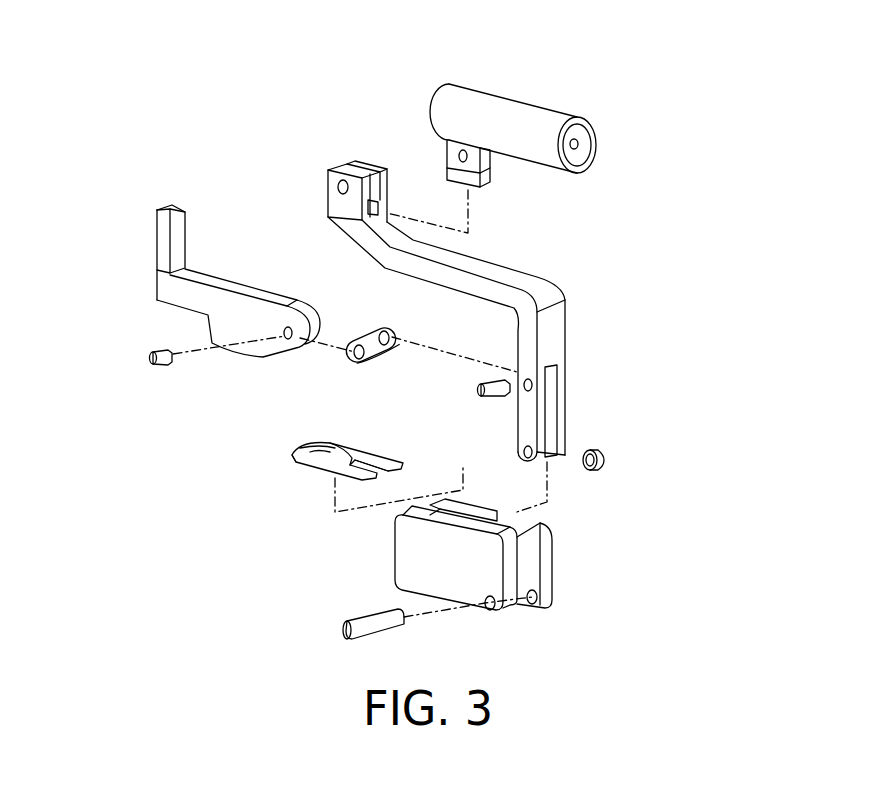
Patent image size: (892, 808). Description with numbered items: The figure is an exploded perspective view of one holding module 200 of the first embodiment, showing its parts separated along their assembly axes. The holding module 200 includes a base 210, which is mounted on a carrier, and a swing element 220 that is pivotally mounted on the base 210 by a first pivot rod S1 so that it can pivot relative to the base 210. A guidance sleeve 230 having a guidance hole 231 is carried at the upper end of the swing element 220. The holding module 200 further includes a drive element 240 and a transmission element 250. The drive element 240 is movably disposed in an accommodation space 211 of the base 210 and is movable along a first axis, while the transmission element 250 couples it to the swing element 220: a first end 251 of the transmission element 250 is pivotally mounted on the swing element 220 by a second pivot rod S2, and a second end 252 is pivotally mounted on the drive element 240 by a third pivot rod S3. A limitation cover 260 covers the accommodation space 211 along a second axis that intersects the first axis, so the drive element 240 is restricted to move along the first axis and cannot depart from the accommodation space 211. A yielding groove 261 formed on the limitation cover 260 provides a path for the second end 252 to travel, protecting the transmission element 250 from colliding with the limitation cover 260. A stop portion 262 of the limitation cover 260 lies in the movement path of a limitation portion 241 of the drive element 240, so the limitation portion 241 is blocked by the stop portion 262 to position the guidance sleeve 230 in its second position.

The holding module 200 is at (246, 144).
The base 210 is at (420, 558).
The accommodation space 211 is at (477, 512).
The swing element 220 is at (550, 296).
The guidance sleeve 230 is at (520, 130).
The guidance hole 231 is at (585, 145).
The drive element 240 is at (232, 306).
The limitation portion 241 is at (160, 242).
The transmission element 250 is at (370, 330).
The first end 251 is at (388, 337).
The second end 252 is at (350, 352).
The limitation cover 260 is at (353, 452).
The yielding groove 261 is at (338, 468).
The stop portion 262 is at (330, 449).
The first pivot rod S1 is at (382, 630).
The second pivot rod S2 is at (480, 390).
The third pivot rod S3 is at (161, 367).